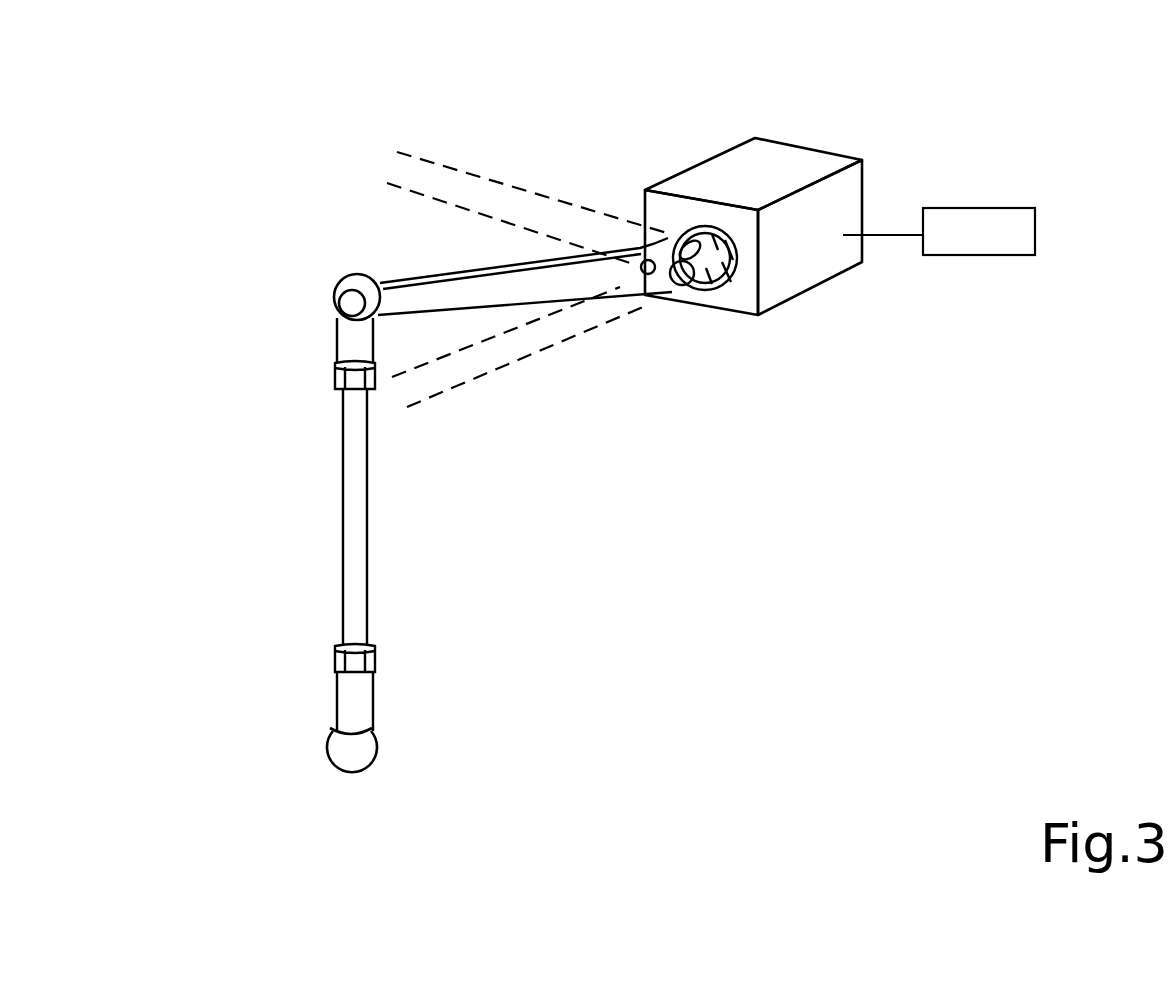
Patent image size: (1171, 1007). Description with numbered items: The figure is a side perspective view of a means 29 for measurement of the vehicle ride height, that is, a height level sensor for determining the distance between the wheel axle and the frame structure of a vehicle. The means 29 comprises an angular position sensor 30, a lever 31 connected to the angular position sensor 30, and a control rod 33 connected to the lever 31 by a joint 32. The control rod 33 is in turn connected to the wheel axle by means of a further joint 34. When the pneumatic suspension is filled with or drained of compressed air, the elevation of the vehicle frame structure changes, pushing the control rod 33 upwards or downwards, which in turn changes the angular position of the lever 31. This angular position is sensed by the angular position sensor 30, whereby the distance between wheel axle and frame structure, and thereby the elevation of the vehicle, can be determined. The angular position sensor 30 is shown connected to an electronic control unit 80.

The means for measurement of the vehicle ride height 29 is at (758, 587).
The angular position sensor 30 is at (788, 160).
The lever 31 is at (560, 300).
The joint 32 is at (340, 278).
The control rod 33 is at (367, 571).
The joint 34 is at (380, 744).
The electronic control unit 80 is at (1007, 203).